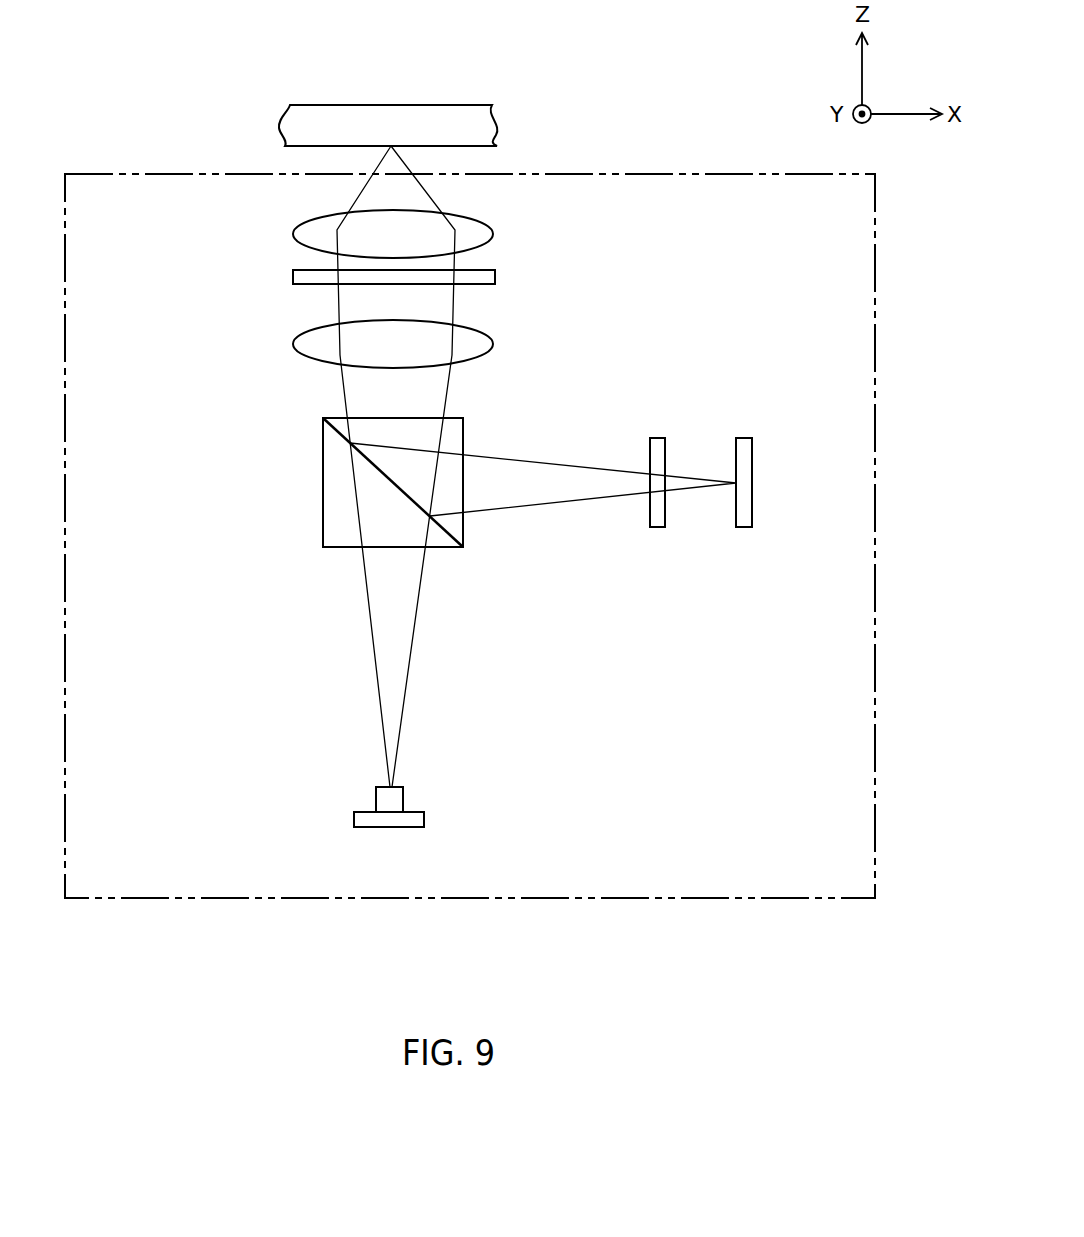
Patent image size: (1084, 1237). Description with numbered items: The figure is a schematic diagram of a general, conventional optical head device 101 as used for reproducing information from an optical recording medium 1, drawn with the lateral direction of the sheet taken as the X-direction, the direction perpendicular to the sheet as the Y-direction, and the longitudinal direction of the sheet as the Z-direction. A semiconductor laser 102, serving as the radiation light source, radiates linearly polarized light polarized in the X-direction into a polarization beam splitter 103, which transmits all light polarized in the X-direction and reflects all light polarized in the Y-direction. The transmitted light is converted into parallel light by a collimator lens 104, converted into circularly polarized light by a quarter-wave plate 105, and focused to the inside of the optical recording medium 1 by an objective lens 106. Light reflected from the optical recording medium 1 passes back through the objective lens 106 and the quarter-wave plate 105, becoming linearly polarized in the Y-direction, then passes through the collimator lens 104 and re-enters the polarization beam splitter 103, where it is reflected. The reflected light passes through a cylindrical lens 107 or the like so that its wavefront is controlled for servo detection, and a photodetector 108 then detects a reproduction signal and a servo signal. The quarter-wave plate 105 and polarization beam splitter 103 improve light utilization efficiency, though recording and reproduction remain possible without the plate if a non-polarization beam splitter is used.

The optical recording medium 1 is at (442, 117).
The optical head device 101 is at (678, 175).
The semiconductor laser 102 is at (403, 800).
The polarization beam splitter 103 is at (323, 457).
The collimator lens 104 is at (493, 344).
The quarter-wave plate 105 is at (495, 277).
The objective lens 106 is at (493, 234).
The cylindrical lens 107 is at (657, 527).
The photodetector 108 is at (744, 443).